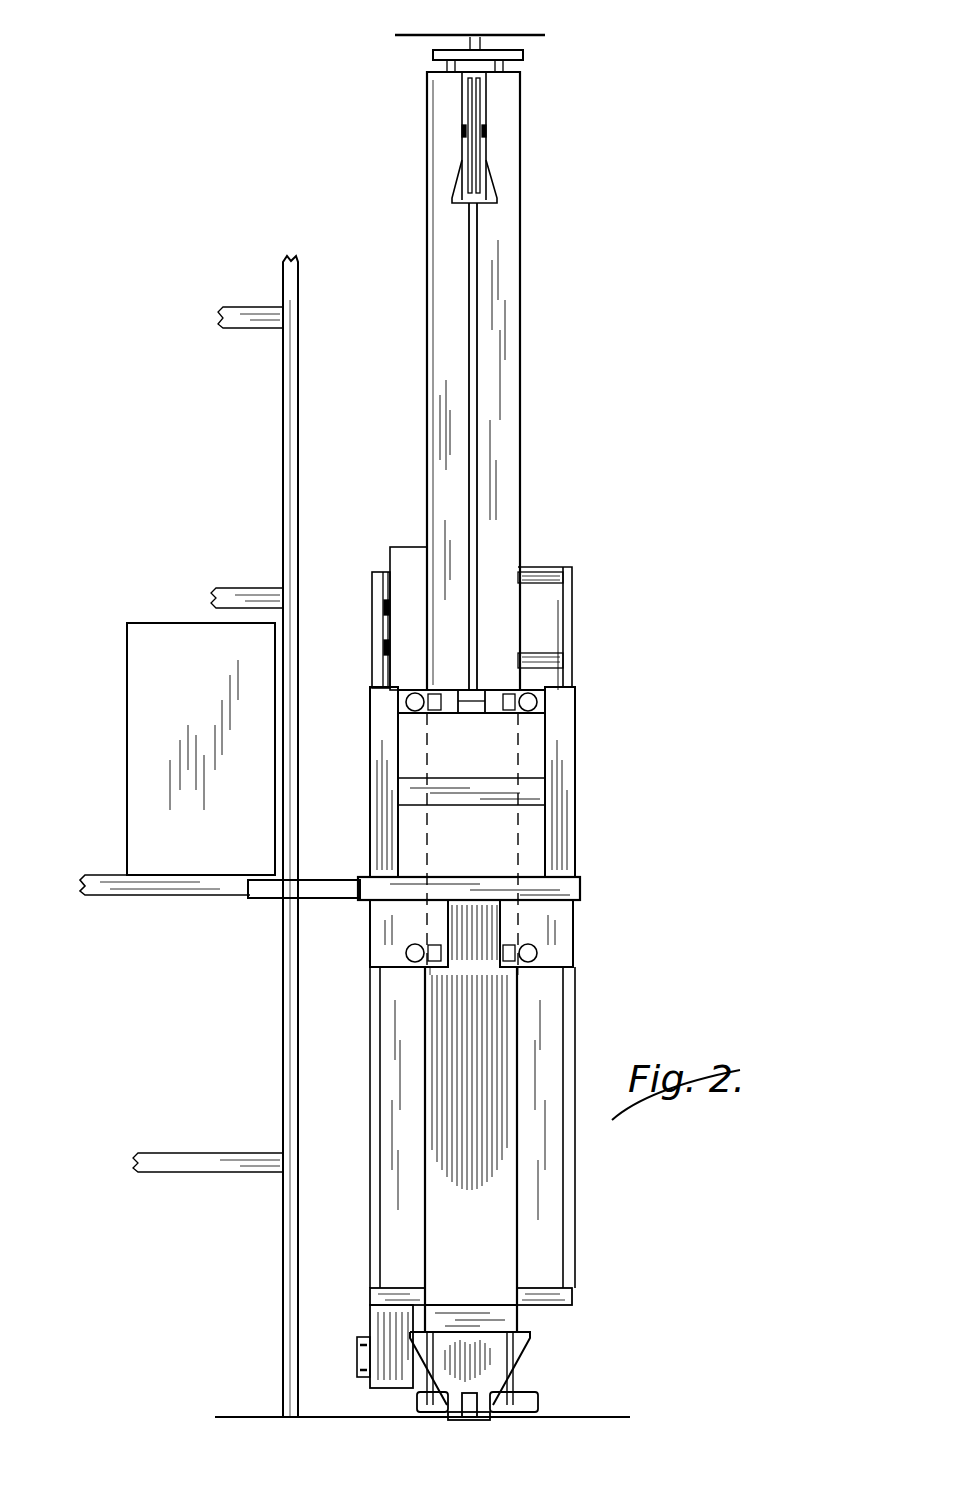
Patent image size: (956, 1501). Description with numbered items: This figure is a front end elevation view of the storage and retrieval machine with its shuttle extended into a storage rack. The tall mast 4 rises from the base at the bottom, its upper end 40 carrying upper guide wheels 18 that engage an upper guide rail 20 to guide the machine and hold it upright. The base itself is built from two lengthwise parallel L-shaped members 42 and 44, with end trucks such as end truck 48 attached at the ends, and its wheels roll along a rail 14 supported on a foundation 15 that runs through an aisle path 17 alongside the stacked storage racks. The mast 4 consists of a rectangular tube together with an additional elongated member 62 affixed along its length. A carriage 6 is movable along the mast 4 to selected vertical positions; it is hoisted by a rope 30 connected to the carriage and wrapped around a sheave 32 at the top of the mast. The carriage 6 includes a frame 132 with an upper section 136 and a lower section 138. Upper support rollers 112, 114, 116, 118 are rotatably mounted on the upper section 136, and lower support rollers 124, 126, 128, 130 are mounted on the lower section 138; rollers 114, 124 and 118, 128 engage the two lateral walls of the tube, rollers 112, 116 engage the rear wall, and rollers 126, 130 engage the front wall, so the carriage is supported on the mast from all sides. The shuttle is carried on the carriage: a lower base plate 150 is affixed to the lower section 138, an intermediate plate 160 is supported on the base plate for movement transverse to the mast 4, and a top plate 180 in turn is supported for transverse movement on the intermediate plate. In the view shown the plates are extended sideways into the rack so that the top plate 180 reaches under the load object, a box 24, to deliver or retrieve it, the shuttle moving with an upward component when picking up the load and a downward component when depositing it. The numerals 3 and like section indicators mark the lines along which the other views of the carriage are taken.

The section line 3- 3 is at (339, 703).
The mast 4 is at (454, 371).
The carriage 6 is at (490, 867).
The rail 14 is at (480, 1387).
The foundation 15 is at (605, 1415).
The aisle path 17 is at (313, 1250).
The upper guide wheels 18 is at (524, 55).
The upper guide rail 20 is at (452, 40).
The box 24 is at (140, 740).
The rope 30 is at (473, 318).
The sheave 32 is at (480, 108).
The upper end 40 is at (513, 180).
The L-shaped member 42 is at (540, 1399).
The L-shaped member 44 is at (420, 1402).
The end truck 48 is at (495, 1318).
The elongated member 62 is at (467, 420).
The upper support roller 112 is at (446, 715).
The upper support roller 114 is at (392, 728).
The upper support roller 116 is at (540, 729).
The upper support roller 118 is at (545, 702).
The lower support roller 124 is at (408, 947).
The lower support roller 126 is at (428, 975).
The lower support roller 128 is at (545, 947).
The lower support roller 130 is at (520, 975).
The frame 132 is at (370, 808).
The upper section 136 is at (566, 762).
The lower section 138 is at (373, 917).
The lower base plate 150 is at (535, 873).
The intermediate plate 160 is at (264, 905).
The top plate 180 is at (182, 906).